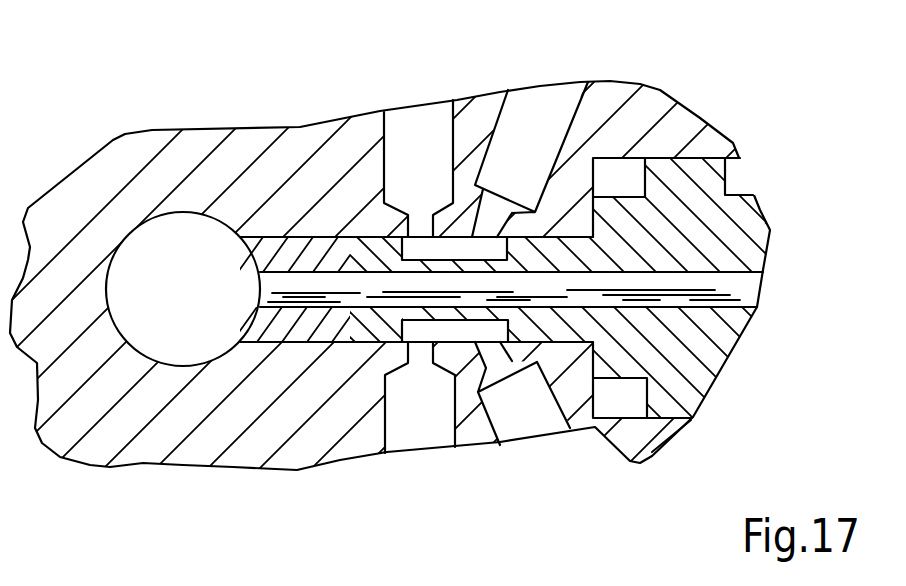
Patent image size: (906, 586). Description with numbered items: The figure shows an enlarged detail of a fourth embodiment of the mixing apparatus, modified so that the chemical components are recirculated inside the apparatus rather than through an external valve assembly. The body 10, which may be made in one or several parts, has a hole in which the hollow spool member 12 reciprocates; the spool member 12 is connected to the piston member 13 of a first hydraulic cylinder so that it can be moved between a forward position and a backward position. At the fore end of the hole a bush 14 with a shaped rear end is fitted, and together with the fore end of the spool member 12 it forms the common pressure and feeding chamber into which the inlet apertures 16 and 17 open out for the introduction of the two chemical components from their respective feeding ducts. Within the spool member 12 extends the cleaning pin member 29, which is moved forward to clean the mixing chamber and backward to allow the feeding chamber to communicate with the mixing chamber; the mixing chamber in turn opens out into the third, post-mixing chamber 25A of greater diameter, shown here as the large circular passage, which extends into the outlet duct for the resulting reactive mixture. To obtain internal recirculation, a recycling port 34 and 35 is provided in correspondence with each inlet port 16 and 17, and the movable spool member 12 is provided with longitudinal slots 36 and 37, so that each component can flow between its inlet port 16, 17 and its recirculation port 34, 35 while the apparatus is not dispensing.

The body 10 is at (72, 198).
The third chamber 25A is at (175, 287).
The spool member 12 is at (565, 255).
The piston member 13 is at (700, 202).
The bush 14 is at (285, 322).
The inlet aperture 17 is at (420, 225).
The longitudinal slot 36 is at (440, 250).
The recycling port 35 is at (545, 133).
The inlet aperture 16 is at (428, 430).
The longitudinal slot 37 is at (463, 330).
The recycling port 34 is at (522, 417).
The pin member 29 is at (543, 287).